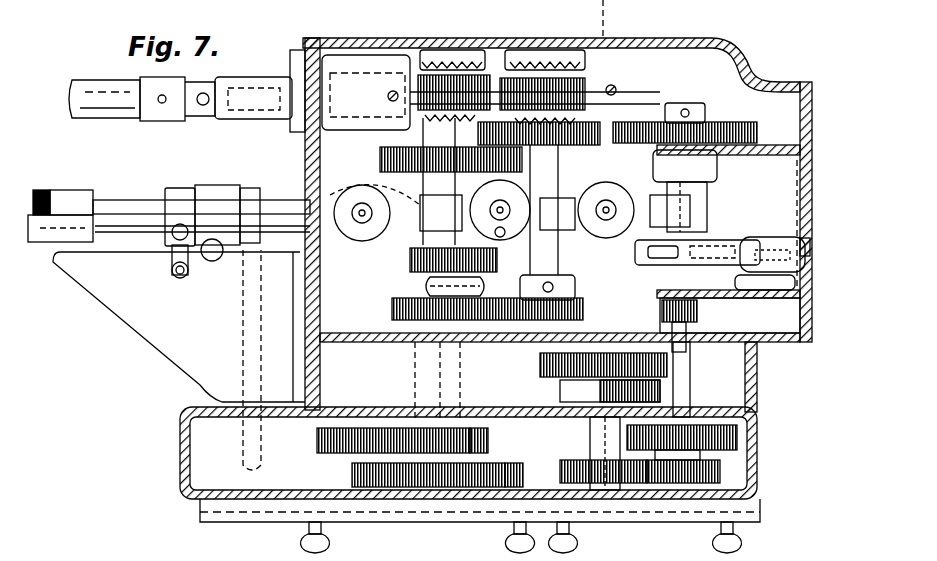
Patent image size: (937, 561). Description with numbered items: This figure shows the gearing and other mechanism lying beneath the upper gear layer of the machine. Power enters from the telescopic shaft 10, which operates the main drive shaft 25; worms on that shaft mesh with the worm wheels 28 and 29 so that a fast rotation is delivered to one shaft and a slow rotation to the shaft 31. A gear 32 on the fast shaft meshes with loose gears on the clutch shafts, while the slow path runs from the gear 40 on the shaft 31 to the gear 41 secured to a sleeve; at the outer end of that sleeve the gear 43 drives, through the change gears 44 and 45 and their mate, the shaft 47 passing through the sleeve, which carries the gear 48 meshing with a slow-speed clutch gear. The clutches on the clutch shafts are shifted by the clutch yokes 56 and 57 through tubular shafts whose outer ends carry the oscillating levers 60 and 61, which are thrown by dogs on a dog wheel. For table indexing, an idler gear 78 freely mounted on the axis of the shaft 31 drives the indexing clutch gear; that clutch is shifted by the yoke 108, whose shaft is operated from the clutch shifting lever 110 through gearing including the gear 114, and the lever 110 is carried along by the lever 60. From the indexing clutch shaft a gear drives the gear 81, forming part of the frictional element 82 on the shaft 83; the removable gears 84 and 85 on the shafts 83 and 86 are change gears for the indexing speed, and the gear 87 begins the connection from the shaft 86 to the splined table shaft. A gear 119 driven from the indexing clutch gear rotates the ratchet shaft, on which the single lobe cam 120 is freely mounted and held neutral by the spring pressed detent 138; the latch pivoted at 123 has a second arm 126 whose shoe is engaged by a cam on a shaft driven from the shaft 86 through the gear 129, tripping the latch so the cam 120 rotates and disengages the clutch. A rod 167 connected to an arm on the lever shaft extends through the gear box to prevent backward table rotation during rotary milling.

The telescopic shaft 10 is at (100, 86).
The main drive shaft 25 is at (268, 78).
The worm wheel 28 is at (490, 73).
The worm wheel 29 is at (515, 76).
The gear 119 is at (768, 116).
The gear 114 is at (42, 190).
The oscillating lever 61 is at (80, 195).
The oscillating lever 60 is at (176, 188).
The clutch shifting lever 110 is at (219, 190).
The gear 32 is at (380, 156).
The idler gear 78 is at (601, 146).
The single lobe cam 120 is at (708, 228).
The spring pressed detent 138 is at (812, 245).
The clutch yoke 56 is at (406, 236).
The clutch yoke 57 is at (497, 244).
The shaft 31 is at (558, 272).
The yoke 108 is at (620, 240).
The gear 48 is at (410, 272).
The gear 41 is at (392, 310).
The gear 40 is at (580, 318).
The gear 129 is at (660, 312).
The second arm 126 is at (748, 298).
The latch pivot 123 is at (795, 298).
The rod 167 is at (245, 345).
The gear 81 is at (540, 366).
The frictional element 82 is at (560, 398).
The shaft 86 is at (691, 378).
The gear 87 is at (737, 432).
The change gear 44 is at (317, 441).
The gear 43 is at (490, 445).
The shaft 83 is at (590, 431).
The shaft 47 is at (519, 478).
The removable gear 84 is at (585, 468).
The removable gear 85 is at (720, 468).
The change gear 45 is at (352, 471).